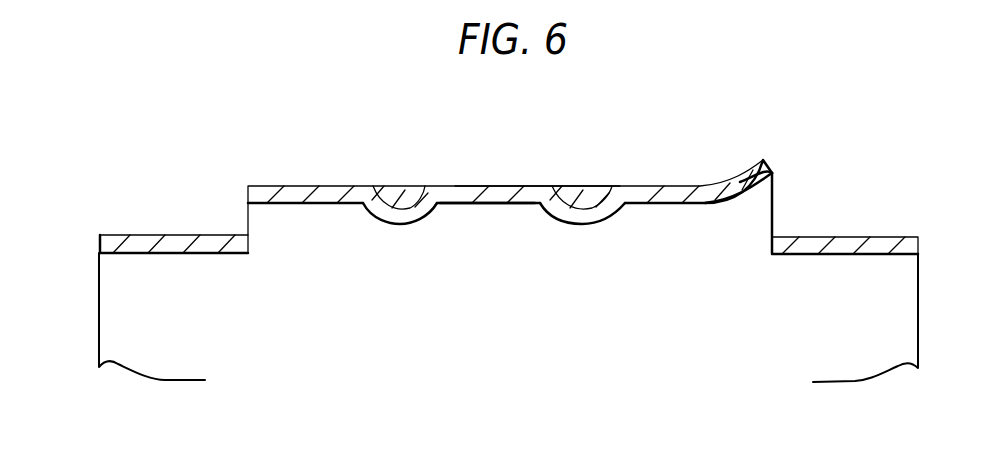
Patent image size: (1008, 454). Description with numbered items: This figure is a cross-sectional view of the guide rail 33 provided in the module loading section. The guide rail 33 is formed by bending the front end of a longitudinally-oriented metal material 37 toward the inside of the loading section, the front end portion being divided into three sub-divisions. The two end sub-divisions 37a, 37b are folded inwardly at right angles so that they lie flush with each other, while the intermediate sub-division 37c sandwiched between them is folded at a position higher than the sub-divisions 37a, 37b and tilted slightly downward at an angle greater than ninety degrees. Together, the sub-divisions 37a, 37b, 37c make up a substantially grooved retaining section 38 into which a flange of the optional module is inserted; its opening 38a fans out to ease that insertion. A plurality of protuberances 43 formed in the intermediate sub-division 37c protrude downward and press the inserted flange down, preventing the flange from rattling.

The guide rail 33 is at (301, 178).
The metal material 37 is at (99, 272).
The sub-division 37a is at (868, 237).
The sub-division 37b is at (147, 235).
The intermediate sub-division 37c is at (498, 186).
The retaining section 38 is at (500, 220).
The opening 38a is at (757, 212).
The protuberance 43 is at (398, 200).